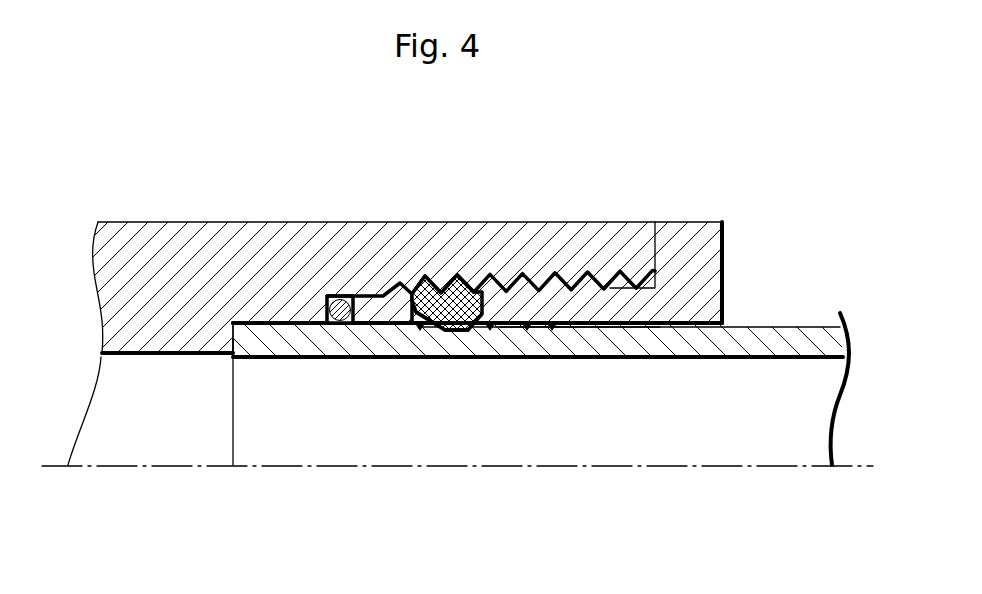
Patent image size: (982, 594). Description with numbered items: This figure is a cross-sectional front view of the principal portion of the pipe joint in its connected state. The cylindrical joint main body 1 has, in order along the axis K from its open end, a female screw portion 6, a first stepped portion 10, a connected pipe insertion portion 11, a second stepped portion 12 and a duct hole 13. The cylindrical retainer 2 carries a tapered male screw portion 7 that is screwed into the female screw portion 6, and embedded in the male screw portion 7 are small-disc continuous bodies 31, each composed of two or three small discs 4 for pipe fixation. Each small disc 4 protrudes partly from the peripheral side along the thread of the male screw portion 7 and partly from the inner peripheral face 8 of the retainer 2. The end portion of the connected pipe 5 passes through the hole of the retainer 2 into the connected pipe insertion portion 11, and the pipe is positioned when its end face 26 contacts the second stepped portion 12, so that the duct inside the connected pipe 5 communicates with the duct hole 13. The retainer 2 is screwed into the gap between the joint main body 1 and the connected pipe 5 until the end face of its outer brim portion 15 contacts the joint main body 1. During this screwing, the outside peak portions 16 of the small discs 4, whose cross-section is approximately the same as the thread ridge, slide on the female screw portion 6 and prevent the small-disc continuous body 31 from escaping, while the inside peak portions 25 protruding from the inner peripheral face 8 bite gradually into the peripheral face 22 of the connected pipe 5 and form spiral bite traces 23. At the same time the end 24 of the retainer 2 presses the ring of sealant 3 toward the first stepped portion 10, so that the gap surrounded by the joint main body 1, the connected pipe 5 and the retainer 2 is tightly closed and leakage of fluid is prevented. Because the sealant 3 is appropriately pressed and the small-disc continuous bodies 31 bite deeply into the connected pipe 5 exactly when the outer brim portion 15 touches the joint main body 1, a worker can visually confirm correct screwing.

The joint main body 1 is at (267, 216).
The retainer 2 is at (623, 285).
The sealant 3 is at (340, 292).
The small disc 4 is at (417, 330).
The connected pipe 5 is at (782, 324).
The female screw portion 6 is at (560, 333).
The male screw portion 7 is at (503, 274).
The inner peripheral face 8 is at (612, 333).
The first stepped portion 10 is at (337, 327).
The connected pipe insertion portion 11 is at (285, 358).
The second stepped portion 12 is at (252, 358).
The duct hole 13 is at (140, 358).
The outer brim portion 15 is at (683, 220).
The outside peak portion 16 is at (459, 276).
The peripheral face 22 is at (377, 294).
The spiral bite traces 23 is at (550, 335).
The end 24 is at (373, 358).
The inside peak portion 25 is at (433, 332).
The end face 26 is at (234, 342).
The small-disc continuous body 31 is at (470, 277).
The axis K is at (740, 468).